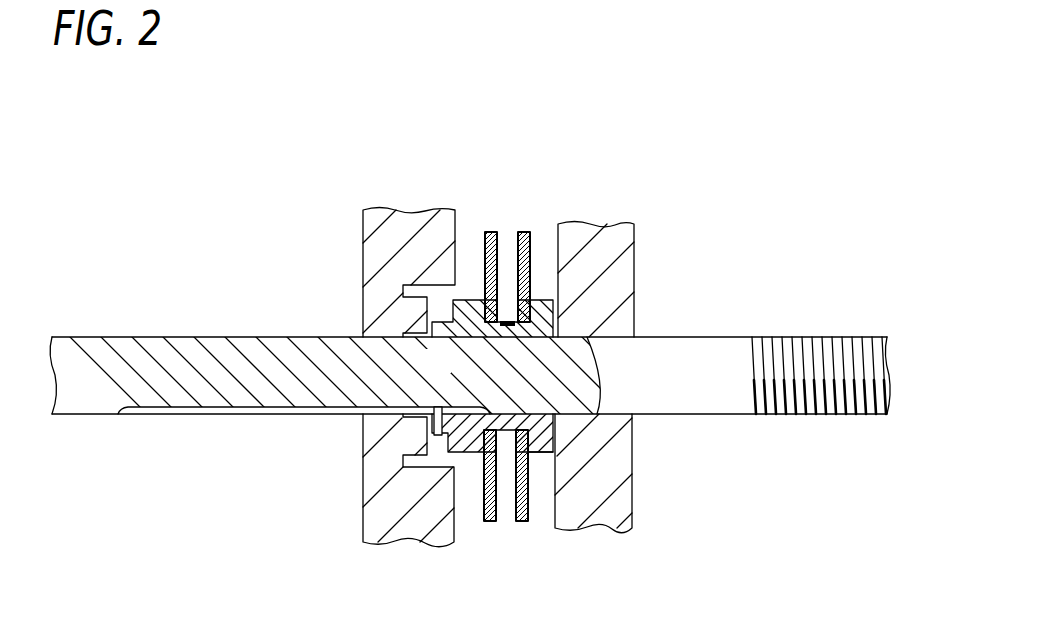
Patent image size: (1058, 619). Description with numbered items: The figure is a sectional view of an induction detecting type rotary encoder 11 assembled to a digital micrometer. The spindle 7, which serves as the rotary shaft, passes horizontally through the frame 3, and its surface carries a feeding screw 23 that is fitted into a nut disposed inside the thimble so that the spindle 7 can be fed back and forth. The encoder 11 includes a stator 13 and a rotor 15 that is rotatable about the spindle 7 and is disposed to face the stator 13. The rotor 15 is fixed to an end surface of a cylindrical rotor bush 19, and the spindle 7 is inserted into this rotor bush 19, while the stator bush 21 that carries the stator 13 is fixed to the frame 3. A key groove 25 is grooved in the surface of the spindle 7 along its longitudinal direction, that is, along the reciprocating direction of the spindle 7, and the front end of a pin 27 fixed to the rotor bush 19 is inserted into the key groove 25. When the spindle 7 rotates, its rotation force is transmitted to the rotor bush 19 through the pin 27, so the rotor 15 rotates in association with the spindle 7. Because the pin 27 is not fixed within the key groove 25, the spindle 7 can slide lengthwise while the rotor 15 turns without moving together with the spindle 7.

The frame 3 is at (363, 256).
The spindle 7 is at (153, 337).
The induction detecting type rotary encoder 11 is at (640, 148).
The stator 13 is at (523, 232).
The rotor 15 is at (490, 232).
The rotor bush 19 is at (478, 301).
The stator bush 21 is at (536, 453).
The feeding screw 23 is at (817, 348).
The key groove 25 is at (288, 412).
The pin 27 is at (435, 407).